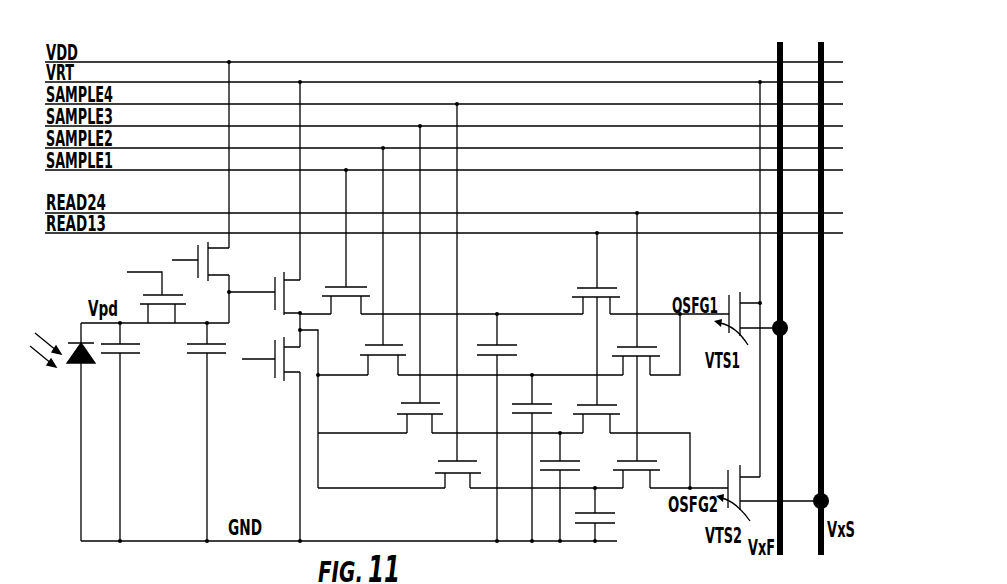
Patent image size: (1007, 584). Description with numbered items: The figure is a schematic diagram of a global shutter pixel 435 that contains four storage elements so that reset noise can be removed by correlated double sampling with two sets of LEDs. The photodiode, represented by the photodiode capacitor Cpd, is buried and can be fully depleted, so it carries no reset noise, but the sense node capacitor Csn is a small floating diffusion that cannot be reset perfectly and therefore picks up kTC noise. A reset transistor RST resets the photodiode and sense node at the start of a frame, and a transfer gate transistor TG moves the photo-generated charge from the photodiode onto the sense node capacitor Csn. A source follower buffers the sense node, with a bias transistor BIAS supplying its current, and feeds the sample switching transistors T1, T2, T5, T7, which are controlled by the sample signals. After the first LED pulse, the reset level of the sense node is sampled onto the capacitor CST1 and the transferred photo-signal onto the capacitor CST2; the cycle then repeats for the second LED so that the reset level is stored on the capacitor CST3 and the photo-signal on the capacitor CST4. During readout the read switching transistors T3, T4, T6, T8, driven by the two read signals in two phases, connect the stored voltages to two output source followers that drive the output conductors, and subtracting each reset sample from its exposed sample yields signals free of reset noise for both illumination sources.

The pixel 435 is at (798, 31).
The reset transistor RST is at (196, 259).
The transfer gate transistor TG is at (144, 291).
The bias transistor BIAS is at (267, 357).
The photodiode capacitor Cpd is at (129, 432).
The sense node capacitor Csn is at (213, 432).
The switching transistor T1 is at (346, 242).
The switching transistor T2 is at (388, 261).
The switching transistor T3 is at (597, 273).
The switching transistor T4 is at (640, 294).
The switching transistor T5 is at (425, 279).
The switching transistor T6 is at (601, 365).
The switching transistor T7 is at (464, 296).
The switching transistor T8 is at (640, 422).
The storage capacitor CST1 is at (508, 427).
The storage capacitor CST2 is at (546, 458).
The storage capacitor CST3 is at (573, 487).
The storage capacitor CST4 is at (609, 514).